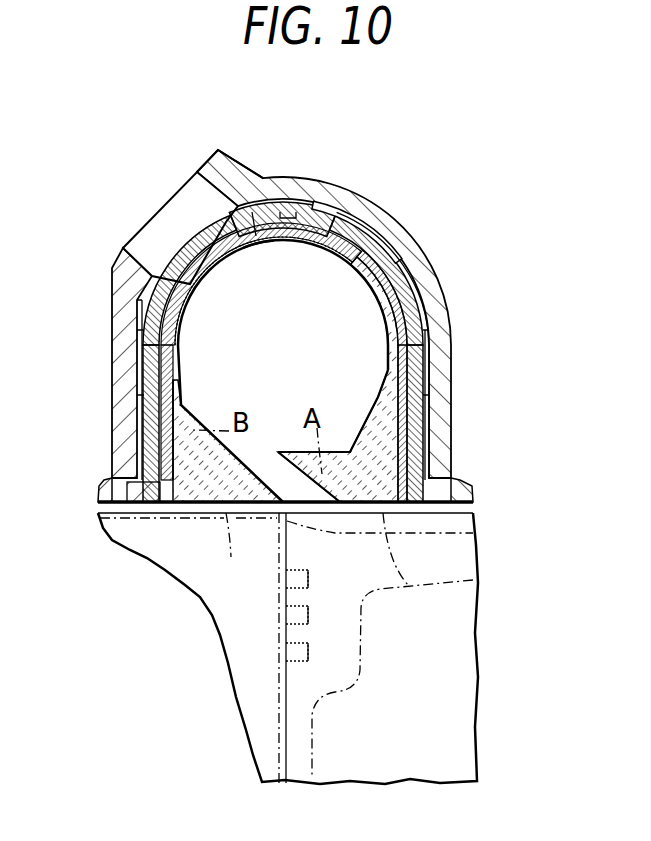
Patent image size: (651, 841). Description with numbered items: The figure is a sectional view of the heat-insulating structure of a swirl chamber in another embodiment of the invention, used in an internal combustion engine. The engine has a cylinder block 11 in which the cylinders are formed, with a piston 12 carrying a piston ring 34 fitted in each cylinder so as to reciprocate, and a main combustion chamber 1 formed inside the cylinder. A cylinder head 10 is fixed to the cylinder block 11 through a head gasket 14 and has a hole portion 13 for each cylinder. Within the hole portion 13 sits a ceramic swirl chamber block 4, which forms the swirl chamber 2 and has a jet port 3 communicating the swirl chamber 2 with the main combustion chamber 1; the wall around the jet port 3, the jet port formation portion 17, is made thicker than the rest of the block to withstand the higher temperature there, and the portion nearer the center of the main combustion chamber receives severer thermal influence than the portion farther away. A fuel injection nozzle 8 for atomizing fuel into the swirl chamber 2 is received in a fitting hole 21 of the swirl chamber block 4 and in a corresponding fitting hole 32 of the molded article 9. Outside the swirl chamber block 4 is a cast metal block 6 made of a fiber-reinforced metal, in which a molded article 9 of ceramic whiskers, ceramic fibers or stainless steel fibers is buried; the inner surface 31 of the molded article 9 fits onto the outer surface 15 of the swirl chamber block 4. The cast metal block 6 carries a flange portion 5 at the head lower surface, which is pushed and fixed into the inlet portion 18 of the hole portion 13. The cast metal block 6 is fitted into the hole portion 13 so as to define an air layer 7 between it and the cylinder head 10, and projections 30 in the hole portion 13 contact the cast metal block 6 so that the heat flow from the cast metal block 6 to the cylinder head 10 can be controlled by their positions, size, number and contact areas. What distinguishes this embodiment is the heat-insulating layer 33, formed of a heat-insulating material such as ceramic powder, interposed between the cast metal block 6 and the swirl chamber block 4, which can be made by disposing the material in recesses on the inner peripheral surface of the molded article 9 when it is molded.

The main combustion chamber 1 is at (406, 586).
The swirl chamber 2 is at (290, 337).
The jet port 3 is at (290, 488).
The swirl chamber block 4 is at (143, 416).
The flange portion 5 is at (142, 505).
The cast metal block 6 is at (370, 227).
The air layer 7 is at (337, 202).
The fuel injection nozzle 8 is at (152, 228).
The molded article 9 is at (415, 262).
The cylinder head 10 is at (450, 328).
The cylinder block 11 is at (231, 651).
The piston 12 is at (333, 573).
The hole portion 13 is at (287, 210).
The head gasket 14 is at (188, 549).
The outer surface 15 is at (327, 250).
The jet port formation portion 17 is at (205, 475).
The inlet portion 18 is at (95, 487).
The fitting hole 21 is at (250, 243).
The projections 30 is at (408, 275).
The inner surface 31 is at (262, 205).
The fitting hole 32 is at (220, 222).
The heat-insulating layer 33 is at (400, 385).
The piston ring 34 is at (308, 612).